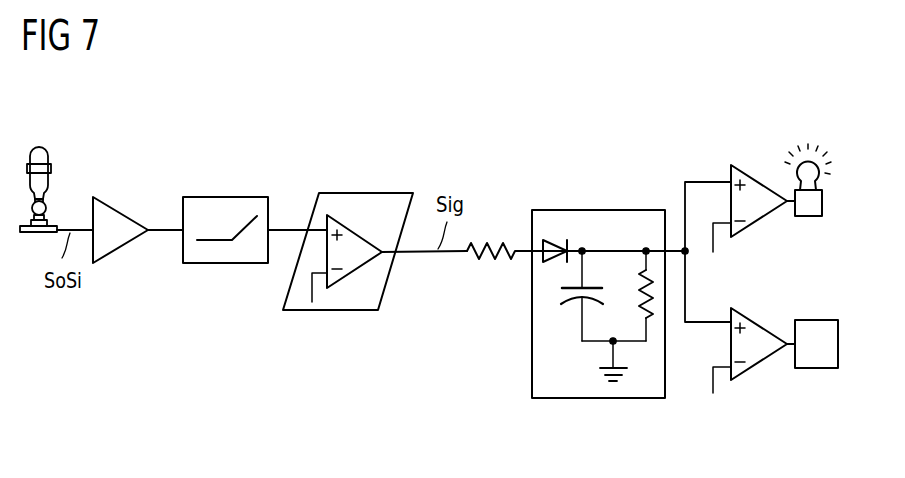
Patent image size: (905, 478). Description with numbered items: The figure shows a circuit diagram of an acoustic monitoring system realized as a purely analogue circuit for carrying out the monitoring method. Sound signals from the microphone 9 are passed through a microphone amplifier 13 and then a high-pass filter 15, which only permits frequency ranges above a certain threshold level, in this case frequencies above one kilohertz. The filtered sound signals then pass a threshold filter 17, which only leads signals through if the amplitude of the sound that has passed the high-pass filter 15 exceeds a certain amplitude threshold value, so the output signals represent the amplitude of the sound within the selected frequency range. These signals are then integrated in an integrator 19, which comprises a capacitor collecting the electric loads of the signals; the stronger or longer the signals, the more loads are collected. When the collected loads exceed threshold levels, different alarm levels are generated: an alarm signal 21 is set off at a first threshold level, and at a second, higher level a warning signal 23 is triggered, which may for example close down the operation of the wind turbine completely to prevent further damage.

The microphone 9 is at (39, 146).
The microphone amplifier 13 is at (125, 214).
The high-pass filter 15 is at (224, 197).
The threshold filter 17 is at (369, 193).
The integrator 19 is at (598, 210).
The alarm signal 21 is at (808, 218).
The warning signal 23 is at (816, 370).